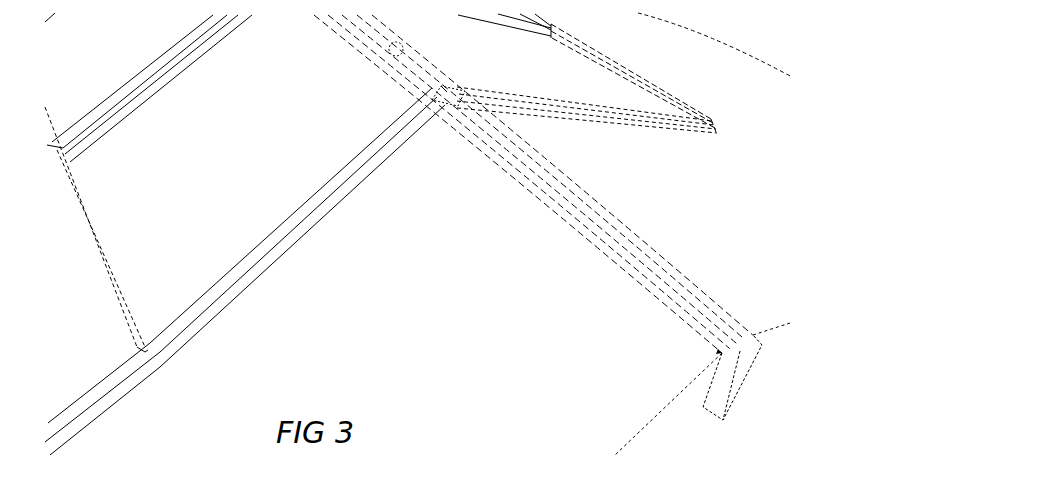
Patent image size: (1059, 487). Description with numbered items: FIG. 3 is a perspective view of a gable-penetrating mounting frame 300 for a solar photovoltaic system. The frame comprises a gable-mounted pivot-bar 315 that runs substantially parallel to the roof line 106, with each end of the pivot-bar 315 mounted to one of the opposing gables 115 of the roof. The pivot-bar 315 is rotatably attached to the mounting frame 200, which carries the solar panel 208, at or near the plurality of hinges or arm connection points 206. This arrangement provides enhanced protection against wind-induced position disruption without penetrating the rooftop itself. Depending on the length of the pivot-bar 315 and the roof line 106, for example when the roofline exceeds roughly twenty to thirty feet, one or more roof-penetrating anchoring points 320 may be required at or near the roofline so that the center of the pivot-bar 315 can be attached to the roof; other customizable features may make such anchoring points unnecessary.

The roof line 106 is at (622, 277).
The gable 115 is at (681, 413).
The mounting frame 200 is at (229, 116).
The arm connection point 206 is at (434, 106).
The solar panel 208 is at (95, 307).
The gable-penetrating mounting frame 300 is at (441, 260).
The gable-mounted pivot-bar 315 is at (622, 236).
The roof-penetrating anchoring point 320 is at (391, 65).